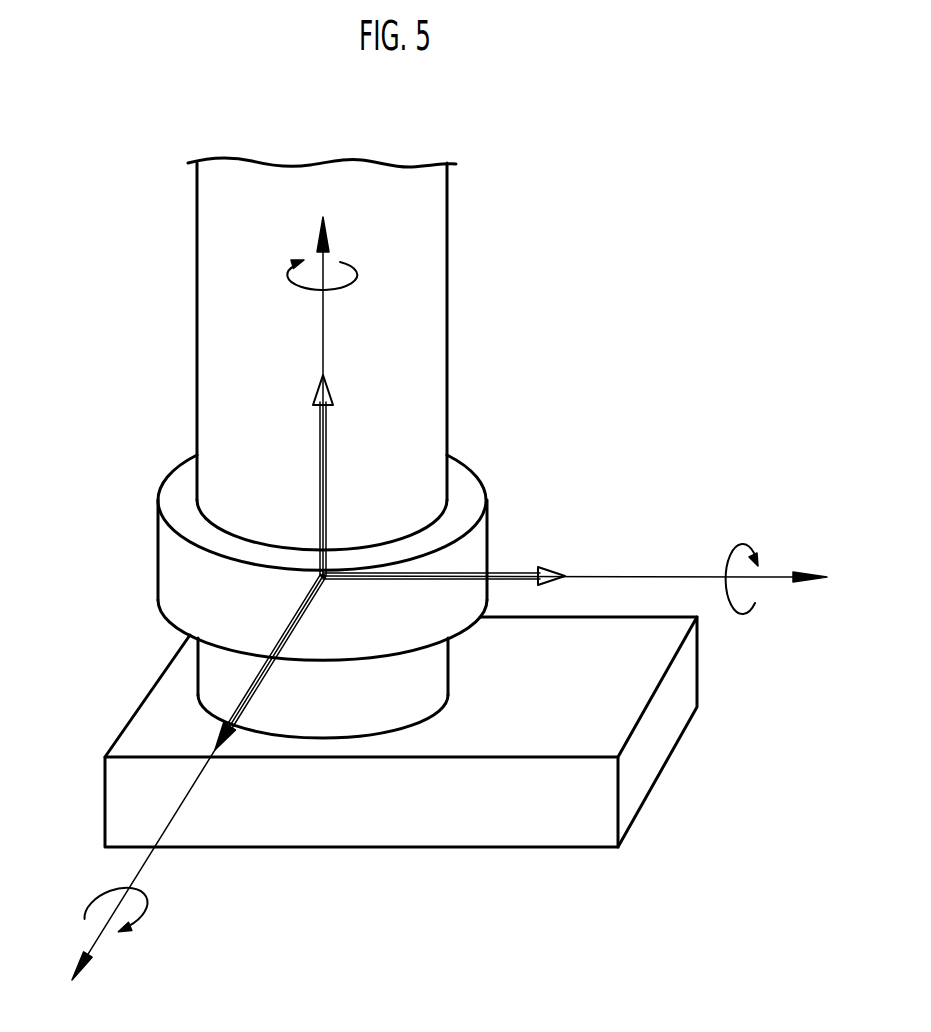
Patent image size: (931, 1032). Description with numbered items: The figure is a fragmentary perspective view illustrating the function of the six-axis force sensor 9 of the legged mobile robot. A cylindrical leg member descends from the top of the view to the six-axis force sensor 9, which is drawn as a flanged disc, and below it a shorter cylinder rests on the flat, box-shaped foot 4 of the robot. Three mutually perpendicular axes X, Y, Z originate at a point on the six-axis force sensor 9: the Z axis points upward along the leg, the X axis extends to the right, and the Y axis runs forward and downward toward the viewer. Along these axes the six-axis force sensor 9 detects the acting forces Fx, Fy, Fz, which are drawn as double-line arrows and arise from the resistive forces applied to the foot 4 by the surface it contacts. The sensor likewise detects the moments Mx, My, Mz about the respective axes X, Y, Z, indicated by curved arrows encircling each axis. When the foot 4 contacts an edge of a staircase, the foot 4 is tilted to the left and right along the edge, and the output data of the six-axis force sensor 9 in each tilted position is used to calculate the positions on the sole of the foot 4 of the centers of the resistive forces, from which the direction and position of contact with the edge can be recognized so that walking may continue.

The six-axis force sensor 9 is at (488, 525).
The foot 4 is at (430, 818).
The X axis X is at (586, 582).
The Y axis Y is at (190, 798).
The Z axis Z is at (322, 381).
The acting force along X axis Fx is at (444, 560).
The acting force along Y axis Fy is at (257, 662).
The acting force along Z axis Fz is at (341, 475).
The moment about X axis Mx is at (741, 564).
The moment about Y axis My is at (131, 912).
The moment about Z axis Mz is at (341, 275).